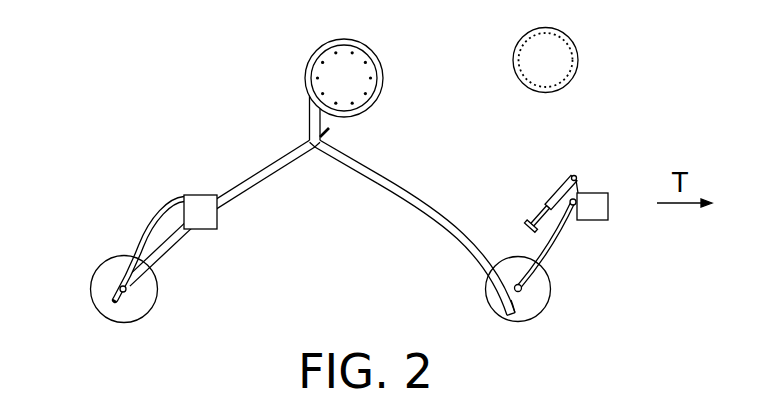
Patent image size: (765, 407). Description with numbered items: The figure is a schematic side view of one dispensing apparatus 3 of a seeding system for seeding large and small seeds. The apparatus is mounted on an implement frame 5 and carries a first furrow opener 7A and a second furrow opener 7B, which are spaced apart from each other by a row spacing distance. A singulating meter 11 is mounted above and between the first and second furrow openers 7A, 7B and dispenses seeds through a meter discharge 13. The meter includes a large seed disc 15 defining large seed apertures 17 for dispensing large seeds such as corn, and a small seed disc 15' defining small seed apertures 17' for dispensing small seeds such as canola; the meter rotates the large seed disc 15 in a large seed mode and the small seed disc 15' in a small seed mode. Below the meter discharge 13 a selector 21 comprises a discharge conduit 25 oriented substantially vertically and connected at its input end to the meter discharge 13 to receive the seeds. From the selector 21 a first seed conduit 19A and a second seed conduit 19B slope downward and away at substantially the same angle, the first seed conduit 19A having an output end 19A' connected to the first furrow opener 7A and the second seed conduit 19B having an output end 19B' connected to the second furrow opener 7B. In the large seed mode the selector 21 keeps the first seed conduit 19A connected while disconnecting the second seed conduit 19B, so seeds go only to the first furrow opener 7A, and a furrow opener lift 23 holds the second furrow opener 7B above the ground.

The dispensing apparatus 3 is at (392, 196).
The singulating meter 11 is at (365, 44).
The meter discharge 13 is at (306, 107).
The large seed disc 15 is at (385, 78).
The large seed apertures 17 is at (386, 83).
The small seed disc 15' is at (584, 52).
The small seed apertures 17' is at (593, 65).
The first seed conduit 19A is at (227, 213).
The second seed conduit 19B is at (415, 227).
The output end of first seed conduit 19A' is at (112, 249).
The output end of second seed conduit 19B' is at (584, 316).
The selector 21 is at (317, 160).
The furrow opener lift 23 is at (557, 194).
The discharge conduit 25 is at (309, 129).
The implement frame 5 is at (200, 195).
The first furrow opener 7A is at (101, 314).
The second furrow opener 7B is at (551, 283).